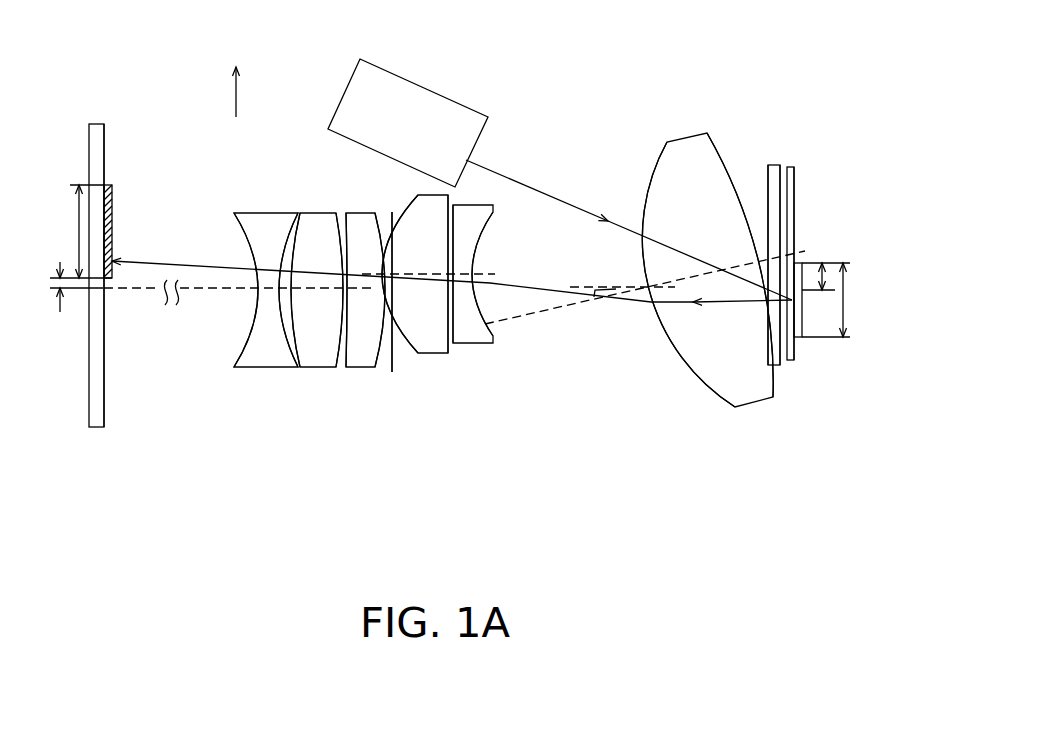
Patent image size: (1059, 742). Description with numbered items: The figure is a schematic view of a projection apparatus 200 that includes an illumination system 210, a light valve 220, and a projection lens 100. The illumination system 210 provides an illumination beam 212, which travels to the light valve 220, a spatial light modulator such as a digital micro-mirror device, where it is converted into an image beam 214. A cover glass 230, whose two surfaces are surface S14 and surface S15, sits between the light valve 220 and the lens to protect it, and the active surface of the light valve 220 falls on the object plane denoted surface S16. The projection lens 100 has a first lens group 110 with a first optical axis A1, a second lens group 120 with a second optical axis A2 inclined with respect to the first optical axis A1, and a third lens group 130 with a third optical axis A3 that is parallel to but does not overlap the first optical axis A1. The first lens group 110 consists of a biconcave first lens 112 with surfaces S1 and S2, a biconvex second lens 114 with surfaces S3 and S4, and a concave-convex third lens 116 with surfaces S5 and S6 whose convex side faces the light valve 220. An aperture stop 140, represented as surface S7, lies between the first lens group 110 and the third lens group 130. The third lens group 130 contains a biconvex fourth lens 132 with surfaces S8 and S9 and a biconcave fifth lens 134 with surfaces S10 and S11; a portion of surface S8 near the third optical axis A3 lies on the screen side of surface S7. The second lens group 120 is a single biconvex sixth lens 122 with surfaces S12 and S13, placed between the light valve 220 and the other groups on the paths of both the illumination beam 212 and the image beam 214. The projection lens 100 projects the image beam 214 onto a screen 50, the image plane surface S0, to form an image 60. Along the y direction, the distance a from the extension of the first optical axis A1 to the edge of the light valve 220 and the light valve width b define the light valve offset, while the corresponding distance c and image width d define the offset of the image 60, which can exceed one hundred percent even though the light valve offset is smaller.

The screen 50 is at (98, 428).
The image 60 is at (110, 206).
The image plane surface S0 is at (108, 139).
The width of the image d is at (81, 231).
The distance between extension line of first optical axis and edge of image c is at (50, 289).
The y direction y is at (234, 77).
The first optical axis A1 is at (205, 290).
The second optical axis A2 is at (543, 314).
The third optical axis A3 is at (495, 274).
The projection apparatus 200 is at (820, 561).
The projection lens 100 is at (776, 415).
The first lens group 110 is at (280, 315).
The first lens 112 is at (264, 368).
The second lens 114 is at (318, 368).
The third lens 116 is at (361, 368).
The aperture stop 140 is at (393, 364).
The third lens group 130 is at (470, 314).
The fourth lens 132 is at (433, 343).
The fifth lens 134 is at (472, 343).
The second lens group 120 is at (691, 300).
The sixth lens 122 is at (727, 385).
The illumination system 210 is at (402, 93).
The illumination beam 212 is at (545, 194).
The image beam 214 is at (629, 301).
The light valve 220 is at (803, 283).
The cover glass 230 is at (774, 165).
The distance between extension line of first optical axis and edge of light valve a is at (826, 275).
The width of the light valve b is at (830, 300).
The surface S1 is at (237, 233).
The surface S2 is at (286, 228).
The surface S3 is at (299, 236).
The surface S4 is at (338, 234).
The surface S5 is at (348, 236).
The surface S6 is at (377, 236).
The surface S7 is at (391, 257).
The surface S8 is at (386, 258).
The surface S9 is at (452, 197).
The surface S10 is at (457, 223).
The surface S11 is at (491, 229).
The surface S12 is at (652, 169).
The surface S13 is at (714, 149).
The surface S14 is at (765, 195).
The surface S15 is at (784, 181).
The surface S16 is at (795, 220).